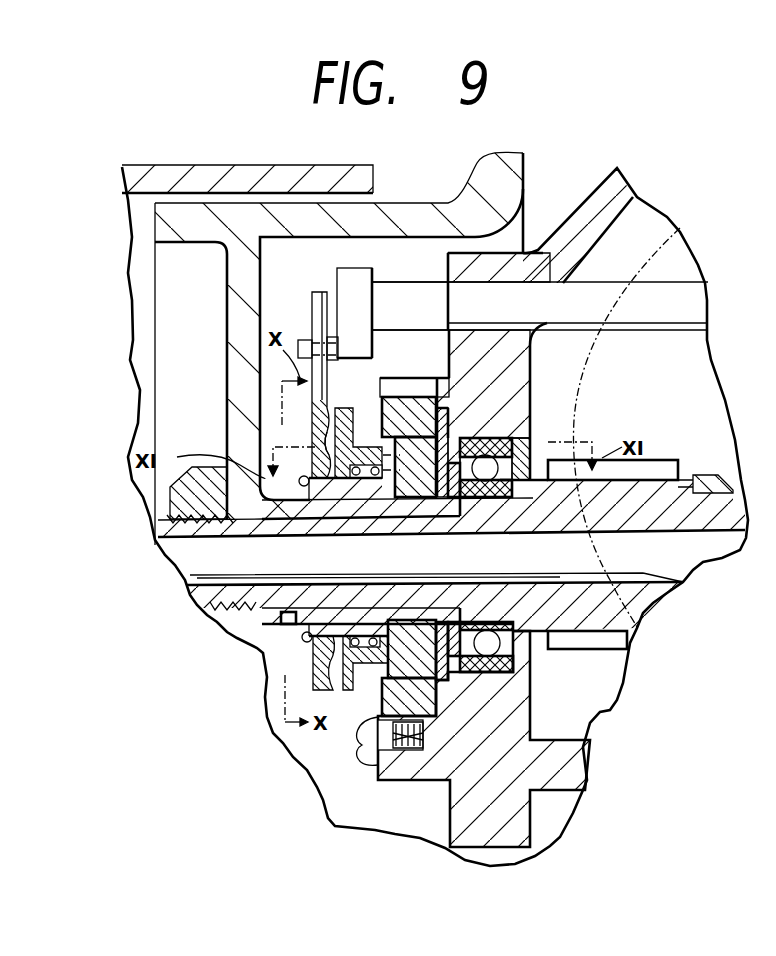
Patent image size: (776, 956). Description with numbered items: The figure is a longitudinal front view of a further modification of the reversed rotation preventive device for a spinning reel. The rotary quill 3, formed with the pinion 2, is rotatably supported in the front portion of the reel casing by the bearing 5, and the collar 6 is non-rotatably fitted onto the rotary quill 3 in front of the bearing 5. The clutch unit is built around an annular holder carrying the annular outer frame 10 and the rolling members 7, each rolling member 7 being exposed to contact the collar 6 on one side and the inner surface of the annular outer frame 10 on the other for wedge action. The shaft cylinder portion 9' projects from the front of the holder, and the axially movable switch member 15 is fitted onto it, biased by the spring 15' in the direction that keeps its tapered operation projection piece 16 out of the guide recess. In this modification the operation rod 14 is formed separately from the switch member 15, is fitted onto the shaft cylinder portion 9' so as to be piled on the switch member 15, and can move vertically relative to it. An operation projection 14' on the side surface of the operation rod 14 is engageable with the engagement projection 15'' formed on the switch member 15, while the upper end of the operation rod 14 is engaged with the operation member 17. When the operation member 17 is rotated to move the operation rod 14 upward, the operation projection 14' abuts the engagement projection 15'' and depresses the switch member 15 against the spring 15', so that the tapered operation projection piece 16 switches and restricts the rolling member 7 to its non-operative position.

The pinion 2 is at (663, 460).
The rotary quill 3 is at (280, 576).
The bearing 5 is at (500, 665).
The collar 6 is at (293, 597).
The rolling members 7 is at (492, 443).
The shaft cylinder portion 9' is at (209, 516).
The annular outer frame 10 is at (390, 392).
The operation rod 14 is at (210, 376).
The operation projection 14' is at (249, 553).
The switch member 15 is at (348, 716).
The spring 15' is at (384, 756).
The engagement projection 15'' is at (374, 327).
The operation projection piece 16 is at (467, 430).
The operation member 17 is at (668, 290).